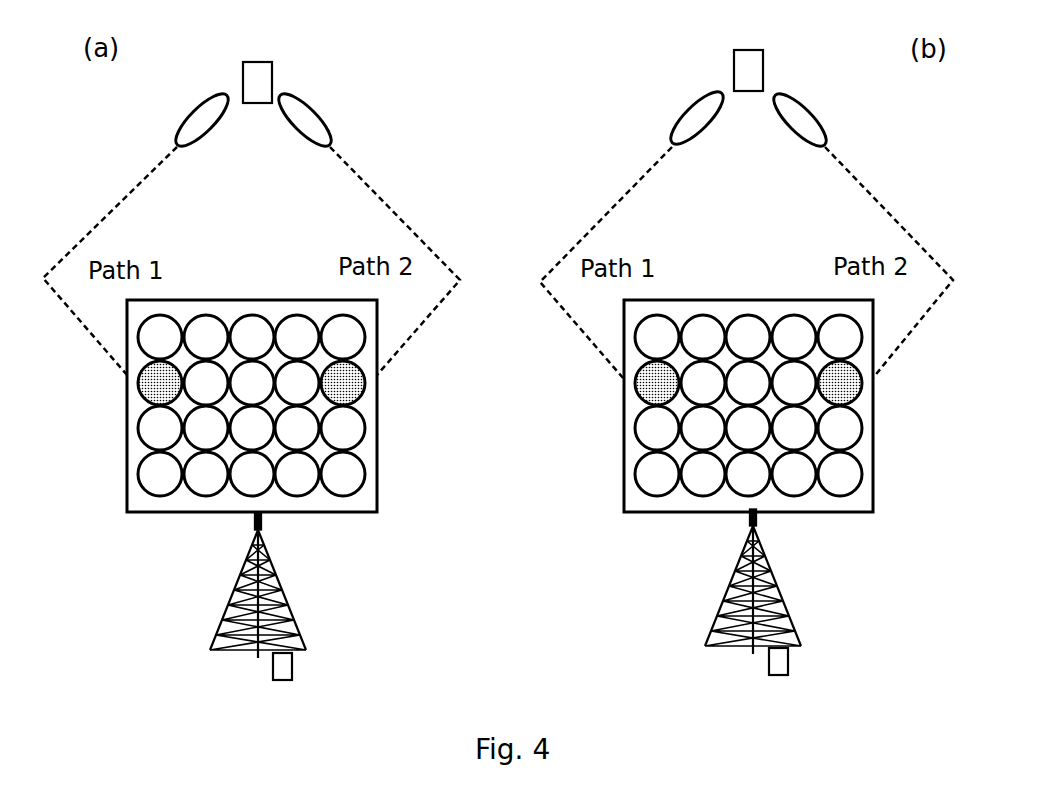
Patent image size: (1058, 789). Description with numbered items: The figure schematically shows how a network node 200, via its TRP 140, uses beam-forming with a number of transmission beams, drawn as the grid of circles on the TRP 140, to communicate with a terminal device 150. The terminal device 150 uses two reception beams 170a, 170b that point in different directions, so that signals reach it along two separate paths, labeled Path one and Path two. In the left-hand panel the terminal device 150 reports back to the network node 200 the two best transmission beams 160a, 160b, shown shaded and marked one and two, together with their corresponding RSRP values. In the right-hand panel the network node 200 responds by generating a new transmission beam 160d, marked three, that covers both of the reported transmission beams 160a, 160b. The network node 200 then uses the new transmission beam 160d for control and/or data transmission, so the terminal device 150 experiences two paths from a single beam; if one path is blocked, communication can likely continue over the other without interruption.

The terminal device 150 is at (258, 62).
The reception beam 170a is at (178, 128).
The reception beam 170b is at (320, 104).
The TRP 140 is at (132, 462).
The transmission beam 160a is at (127, 388).
The transmission beam 160b is at (367, 380).
The new transmission beam 160d is at (633, 400).
The network node 200 is at (273, 668).